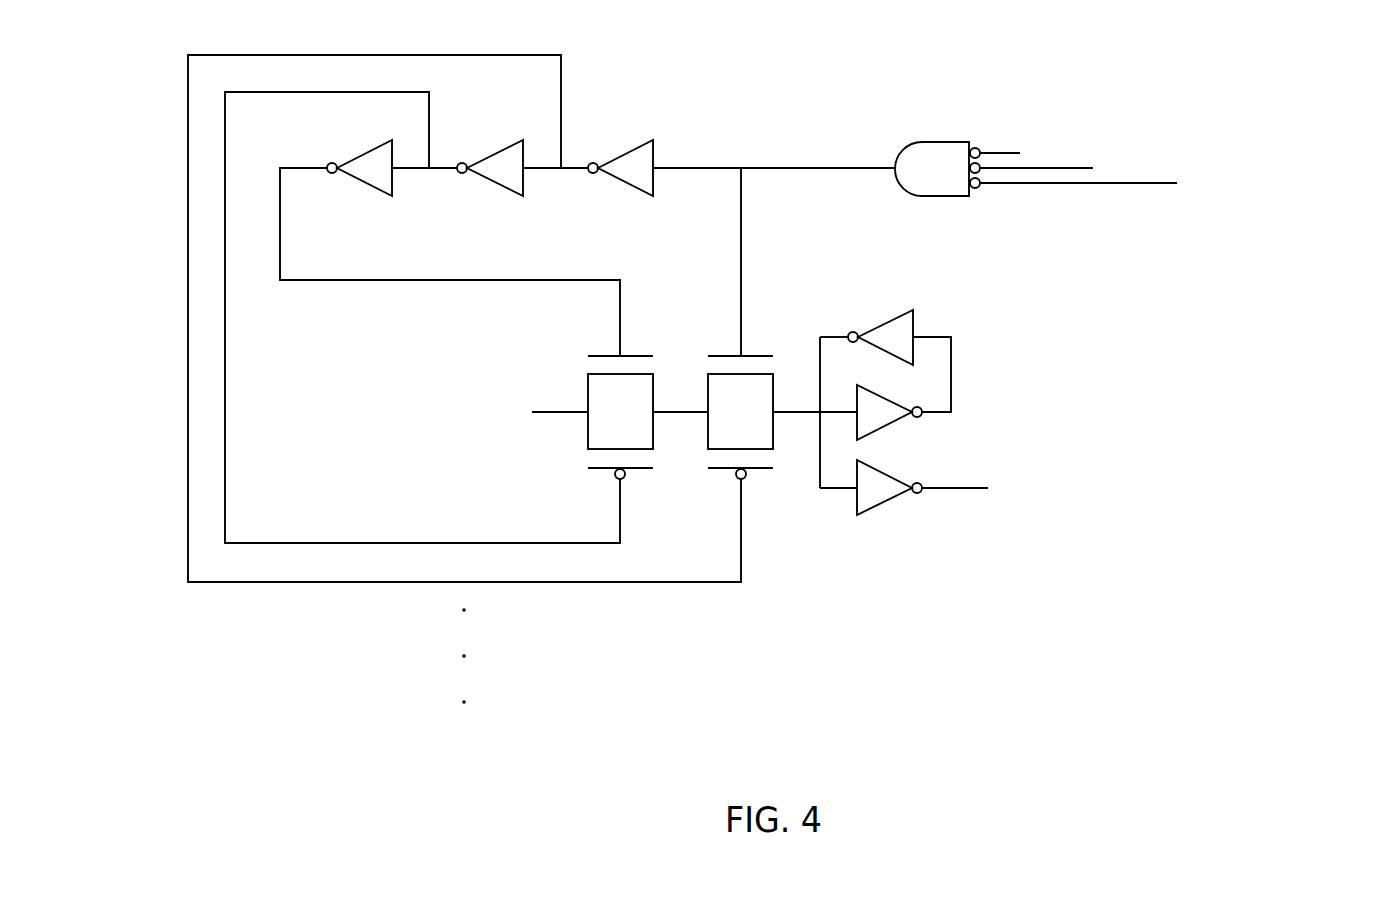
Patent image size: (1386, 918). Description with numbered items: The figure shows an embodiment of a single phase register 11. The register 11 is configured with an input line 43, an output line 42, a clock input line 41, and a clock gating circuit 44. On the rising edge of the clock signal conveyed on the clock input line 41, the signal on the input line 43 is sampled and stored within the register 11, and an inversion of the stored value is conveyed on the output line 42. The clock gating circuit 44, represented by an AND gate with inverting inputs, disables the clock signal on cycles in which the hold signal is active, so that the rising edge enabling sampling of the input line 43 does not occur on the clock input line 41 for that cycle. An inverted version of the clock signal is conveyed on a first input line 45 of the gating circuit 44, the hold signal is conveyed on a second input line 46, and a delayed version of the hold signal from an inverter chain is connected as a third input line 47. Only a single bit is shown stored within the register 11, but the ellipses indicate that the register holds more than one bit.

The register 11 is at (1282, 81).
The clock input line 41 is at (765, 168).
The output line 42 is at (960, 488).
The input line 43 is at (548, 412).
The clock gating circuit 44 is at (935, 138).
The first input line 45 is at (1000, 153).
The second input line 46 is at (1078, 168).
The third input line 47 is at (1160, 183).